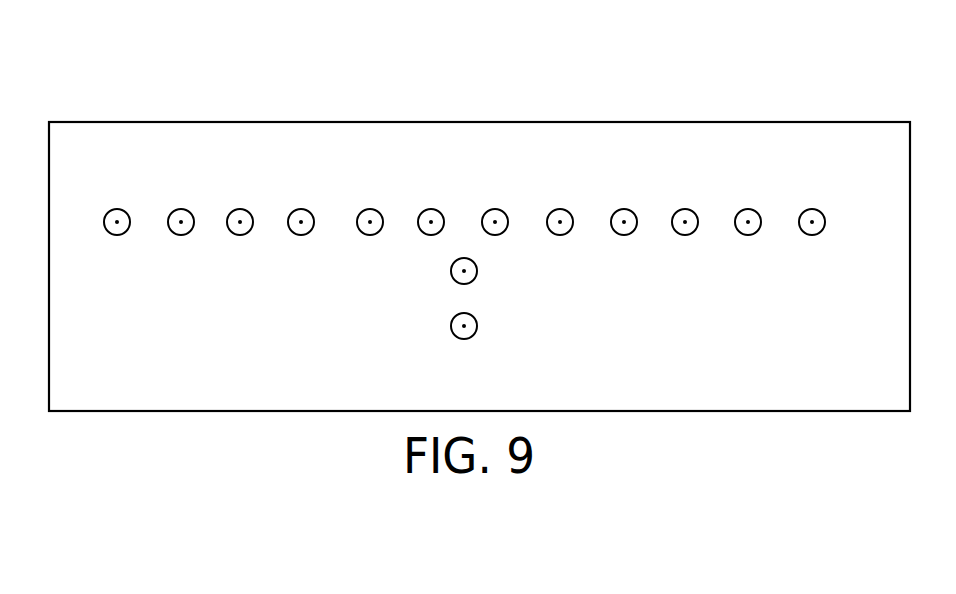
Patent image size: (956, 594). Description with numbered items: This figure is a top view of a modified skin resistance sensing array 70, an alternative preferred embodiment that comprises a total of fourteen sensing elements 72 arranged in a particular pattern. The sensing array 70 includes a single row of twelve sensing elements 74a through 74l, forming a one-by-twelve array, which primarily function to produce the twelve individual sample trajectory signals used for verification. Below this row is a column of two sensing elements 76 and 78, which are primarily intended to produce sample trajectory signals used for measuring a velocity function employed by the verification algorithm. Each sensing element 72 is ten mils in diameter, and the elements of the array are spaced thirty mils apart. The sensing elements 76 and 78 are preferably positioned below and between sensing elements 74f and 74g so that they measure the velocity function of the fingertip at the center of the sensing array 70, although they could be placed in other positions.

The skin resistance sensing array 70 is at (603, 92).
The sensing element 72 is at (318, 296).
The sensing element 74a is at (117, 209).
The sensing element 74f is at (431, 209).
The sensing element 74g is at (495, 209).
The sensing element 74l is at (812, 209).
The sensing element 76 is at (477, 271).
The sensing element 78 is at (477, 326).